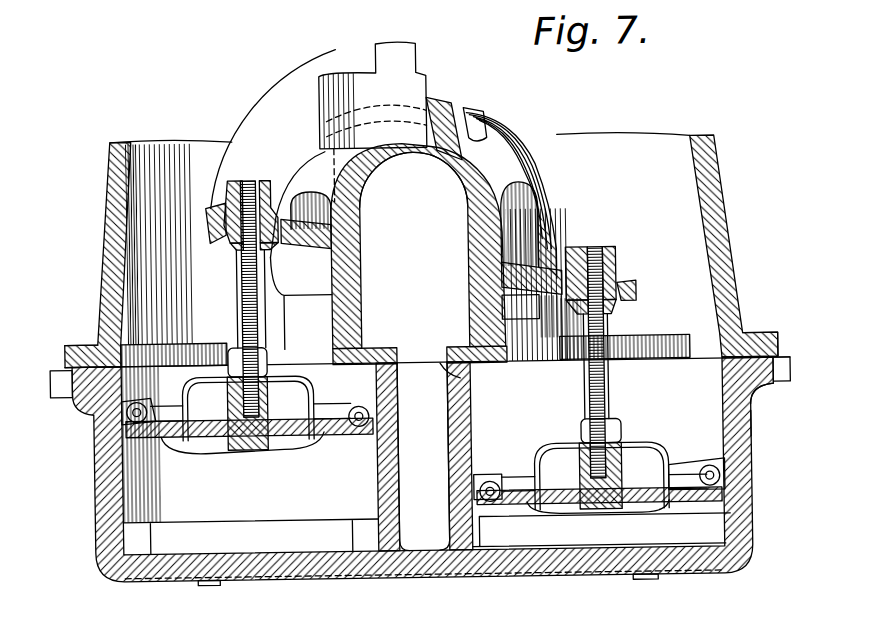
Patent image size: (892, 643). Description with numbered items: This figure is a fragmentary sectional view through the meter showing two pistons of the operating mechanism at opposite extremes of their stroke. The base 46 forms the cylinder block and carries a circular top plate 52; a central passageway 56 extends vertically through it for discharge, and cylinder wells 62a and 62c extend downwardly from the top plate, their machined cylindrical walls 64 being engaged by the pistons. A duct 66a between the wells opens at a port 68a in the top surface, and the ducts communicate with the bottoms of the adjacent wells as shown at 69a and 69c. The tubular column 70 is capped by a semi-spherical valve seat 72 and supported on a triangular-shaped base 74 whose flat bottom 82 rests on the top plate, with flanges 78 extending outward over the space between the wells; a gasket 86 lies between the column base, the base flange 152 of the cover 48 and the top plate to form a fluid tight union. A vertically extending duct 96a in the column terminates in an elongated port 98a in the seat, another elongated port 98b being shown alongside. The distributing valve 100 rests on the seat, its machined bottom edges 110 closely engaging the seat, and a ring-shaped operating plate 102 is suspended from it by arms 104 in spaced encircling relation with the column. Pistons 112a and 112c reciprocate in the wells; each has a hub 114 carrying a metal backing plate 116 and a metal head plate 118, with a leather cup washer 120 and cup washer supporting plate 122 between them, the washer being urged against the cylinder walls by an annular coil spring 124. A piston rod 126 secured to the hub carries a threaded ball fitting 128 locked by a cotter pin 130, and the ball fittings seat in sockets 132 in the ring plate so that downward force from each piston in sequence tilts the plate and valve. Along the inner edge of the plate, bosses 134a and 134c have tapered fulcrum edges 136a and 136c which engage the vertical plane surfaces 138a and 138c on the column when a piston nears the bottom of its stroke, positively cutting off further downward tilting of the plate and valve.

The base 46 is at (753, 467).
The dome or cover 48 is at (720, 230).
The top plate 52 is at (758, 396).
The passageway 56 is at (753, 420).
The cylinder well 62a is at (722, 392).
The cylinder well 62c is at (130, 473).
The cylindrical walls 64 is at (376, 505).
The duct 66a is at (470, 420).
The port 68a is at (460, 405).
The duct communication 69a is at (440, 579).
The duct communication 69c is at (212, 523).
The tubular column 70 is at (549, 168).
The valve seat 72 is at (470, 110).
The triangular-shaped base 74 is at (277, 297).
The flanges 78 is at (180, 352).
The flat bottom 82 is at (475, 370).
The gasket 86 is at (790, 365).
The vertically extending duct 96a is at (362, 275).
The elongated port 98a is at (445, 97).
The elongated port 98b is at (490, 122).
The distributing valve 100 is at (355, 72).
The ring-shaped operating plate 102 is at (517, 265).
The arms 104 is at (255, 133).
The bottom edges 110 is at (390, 152).
The piston 112a is at (645, 445).
The piston 112c is at (318, 402).
The hub 114 is at (280, 405).
The metal backing plate 116 is at (300, 445).
The metal head plate 118 is at (555, 452).
The leather cup washer 120 is at (352, 428).
The cup washer supporting plate 122 is at (268, 440).
The annular coil spring 124 is at (118, 437).
The piston rod 126 is at (262, 345).
The ball fitting 128 is at (240, 240).
The cotter pin 130 is at (258, 178).
The socket 132 is at (222, 228).
The boss 134a is at (520, 265).
The boss 134c is at (315, 248).
The fulcrum edge 136a is at (520, 205).
The fulcrum edge 136c is at (345, 239).
The plane surface 138a is at (537, 160).
The plane surface 138c is at (320, 215).
The base flange 152 is at (78, 340).